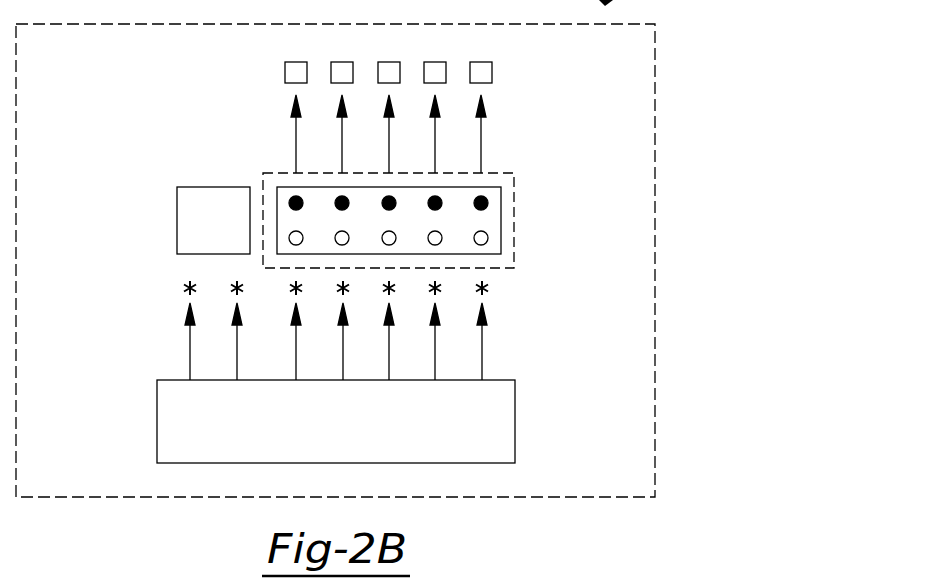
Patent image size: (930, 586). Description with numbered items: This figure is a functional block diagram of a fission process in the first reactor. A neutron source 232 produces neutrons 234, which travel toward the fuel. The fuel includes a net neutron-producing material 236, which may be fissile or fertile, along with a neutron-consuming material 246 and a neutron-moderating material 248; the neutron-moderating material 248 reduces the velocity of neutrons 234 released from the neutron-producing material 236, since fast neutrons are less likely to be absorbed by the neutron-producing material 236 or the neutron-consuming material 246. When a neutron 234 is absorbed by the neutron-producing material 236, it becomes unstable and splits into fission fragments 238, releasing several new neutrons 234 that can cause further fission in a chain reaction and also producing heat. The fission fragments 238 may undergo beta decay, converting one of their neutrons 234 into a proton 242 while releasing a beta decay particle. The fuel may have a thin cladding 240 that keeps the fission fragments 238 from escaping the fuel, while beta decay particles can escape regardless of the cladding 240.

The neutron-moderating material 248 is at (656, 113).
The neutron-consuming material 246 is at (177, 221).
The thin cladding 240 is at (283, 173).
The net neutron-producing material 236 is at (501, 220).
The fission fragments 238 is at (488, 203).
The proton 242 is at (488, 238).
The neutrons 234 is at (174, 289).
The neutron source 232 is at (157, 422).